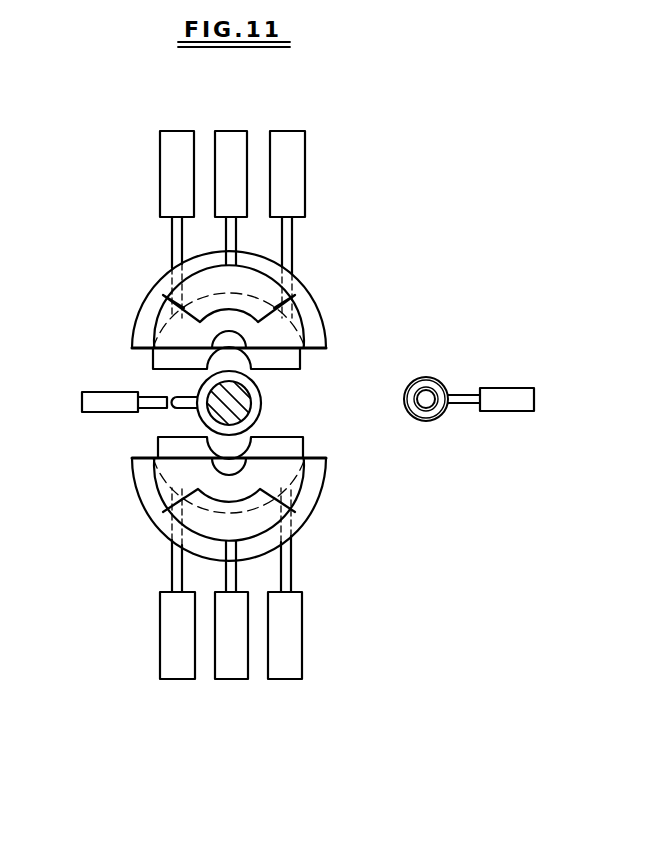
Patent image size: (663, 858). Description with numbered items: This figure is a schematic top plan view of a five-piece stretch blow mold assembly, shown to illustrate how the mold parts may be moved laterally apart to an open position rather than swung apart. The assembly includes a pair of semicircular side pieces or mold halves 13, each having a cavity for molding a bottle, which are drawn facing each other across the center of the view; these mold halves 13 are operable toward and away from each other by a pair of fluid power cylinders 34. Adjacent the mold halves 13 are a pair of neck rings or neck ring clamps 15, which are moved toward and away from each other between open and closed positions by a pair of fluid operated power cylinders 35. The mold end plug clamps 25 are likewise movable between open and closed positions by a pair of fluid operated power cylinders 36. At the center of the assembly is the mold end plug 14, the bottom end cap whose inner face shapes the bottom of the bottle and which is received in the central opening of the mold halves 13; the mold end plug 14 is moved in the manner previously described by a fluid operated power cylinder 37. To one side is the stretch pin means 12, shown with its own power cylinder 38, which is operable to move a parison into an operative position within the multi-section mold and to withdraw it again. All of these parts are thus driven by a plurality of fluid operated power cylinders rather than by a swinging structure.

The stretch pin means 12 is at (445, 378).
The mold halves 13 is at (330, 323).
The mold end plug 14 is at (265, 408).
The neck ring clamps 15 is at (308, 360).
The mold end plug clamps 25 is at (263, 283).
The fluid power cylinders 34 is at (296, 165).
The fluid operated power cylinders 35 is at (167, 193).
The fluid operated power cylinders 36 is at (232, 137).
The fluid operated power cylinder 37 is at (103, 403).
The power cylinder 38 is at (518, 393).